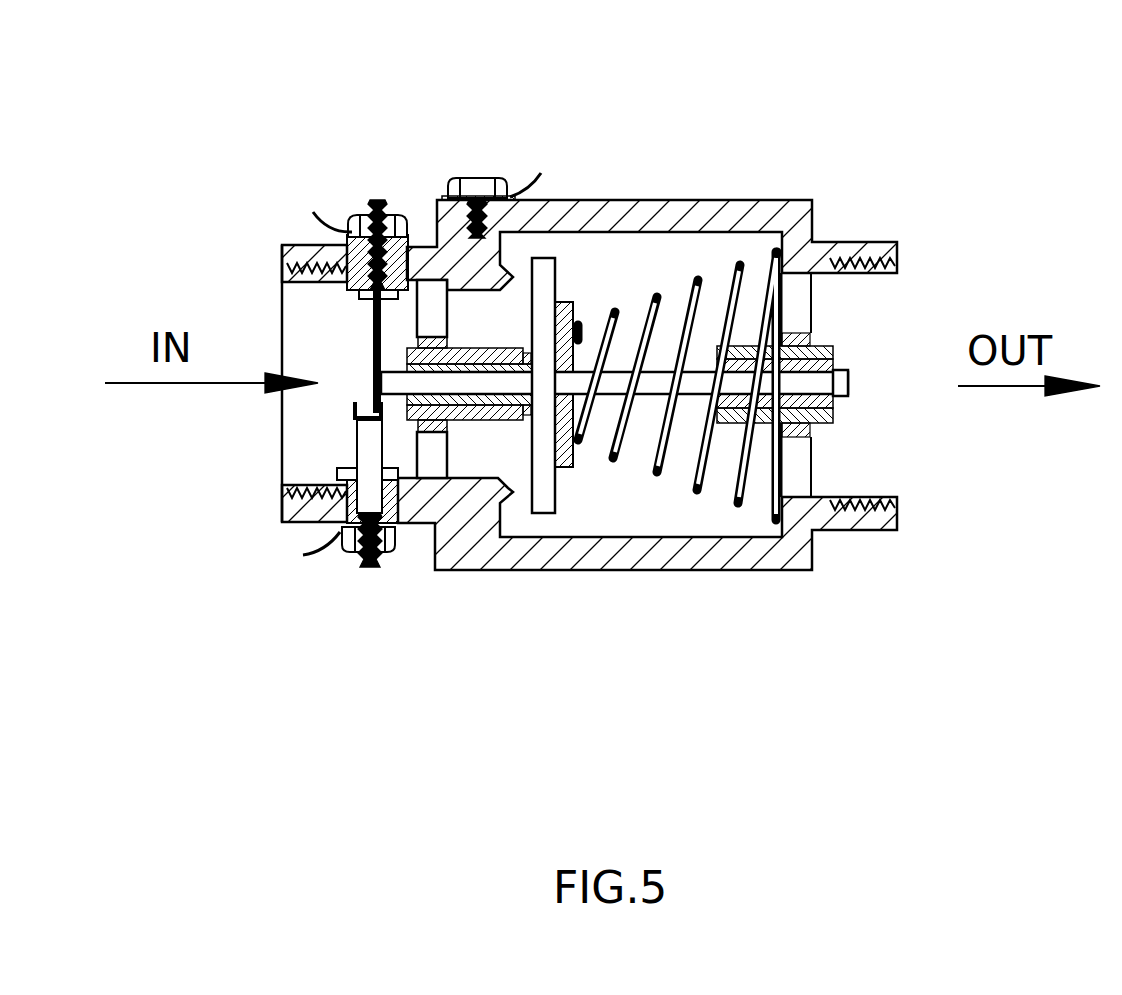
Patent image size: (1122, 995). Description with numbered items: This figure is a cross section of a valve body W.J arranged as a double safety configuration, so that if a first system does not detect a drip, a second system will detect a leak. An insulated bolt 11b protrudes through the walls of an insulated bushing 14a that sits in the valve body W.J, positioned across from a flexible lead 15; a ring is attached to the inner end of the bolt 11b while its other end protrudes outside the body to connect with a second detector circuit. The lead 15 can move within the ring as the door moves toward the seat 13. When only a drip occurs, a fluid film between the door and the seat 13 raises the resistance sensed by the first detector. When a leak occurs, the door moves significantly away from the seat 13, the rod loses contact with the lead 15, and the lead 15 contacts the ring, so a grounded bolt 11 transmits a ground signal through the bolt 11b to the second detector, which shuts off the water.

The bolt 11 is at (371, 200).
The insulated bolt 11b is at (362, 568).
The lead 15 is at (365, 348).
The seat 13 is at (518, 505).
The insulated bushing 14a is at (405, 538).
The valve body W.J is at (695, 568).